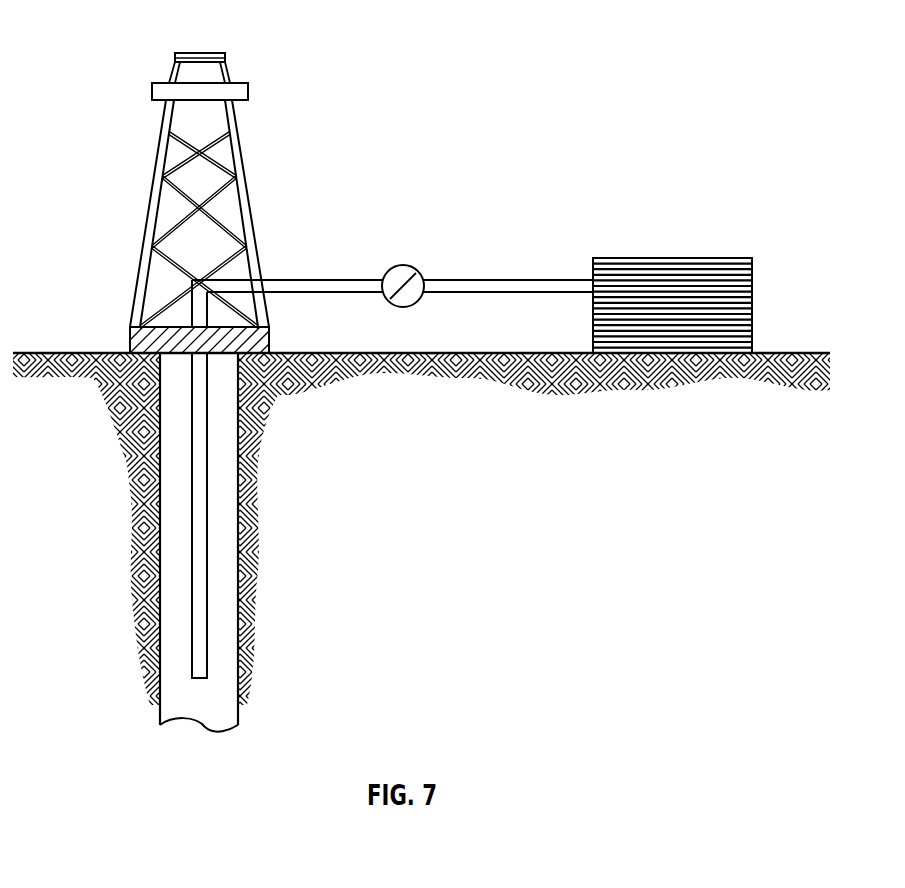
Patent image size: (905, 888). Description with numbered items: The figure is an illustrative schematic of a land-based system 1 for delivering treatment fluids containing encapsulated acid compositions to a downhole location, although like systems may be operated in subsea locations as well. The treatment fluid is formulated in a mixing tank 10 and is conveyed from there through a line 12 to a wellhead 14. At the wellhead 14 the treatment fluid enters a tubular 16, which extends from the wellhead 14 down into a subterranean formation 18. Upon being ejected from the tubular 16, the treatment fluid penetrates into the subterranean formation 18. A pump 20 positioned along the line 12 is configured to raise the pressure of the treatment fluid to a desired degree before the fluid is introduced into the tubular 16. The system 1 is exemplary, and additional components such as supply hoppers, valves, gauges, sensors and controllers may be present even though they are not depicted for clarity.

The system 1 is at (131, 48).
The mixing tank 10 is at (705, 258).
The line 12 is at (350, 279).
The wellhead 14 is at (130, 343).
The tubular 16 is at (207, 466).
The subterranean formation 18 is at (83, 462).
The pump 20 is at (405, 265).